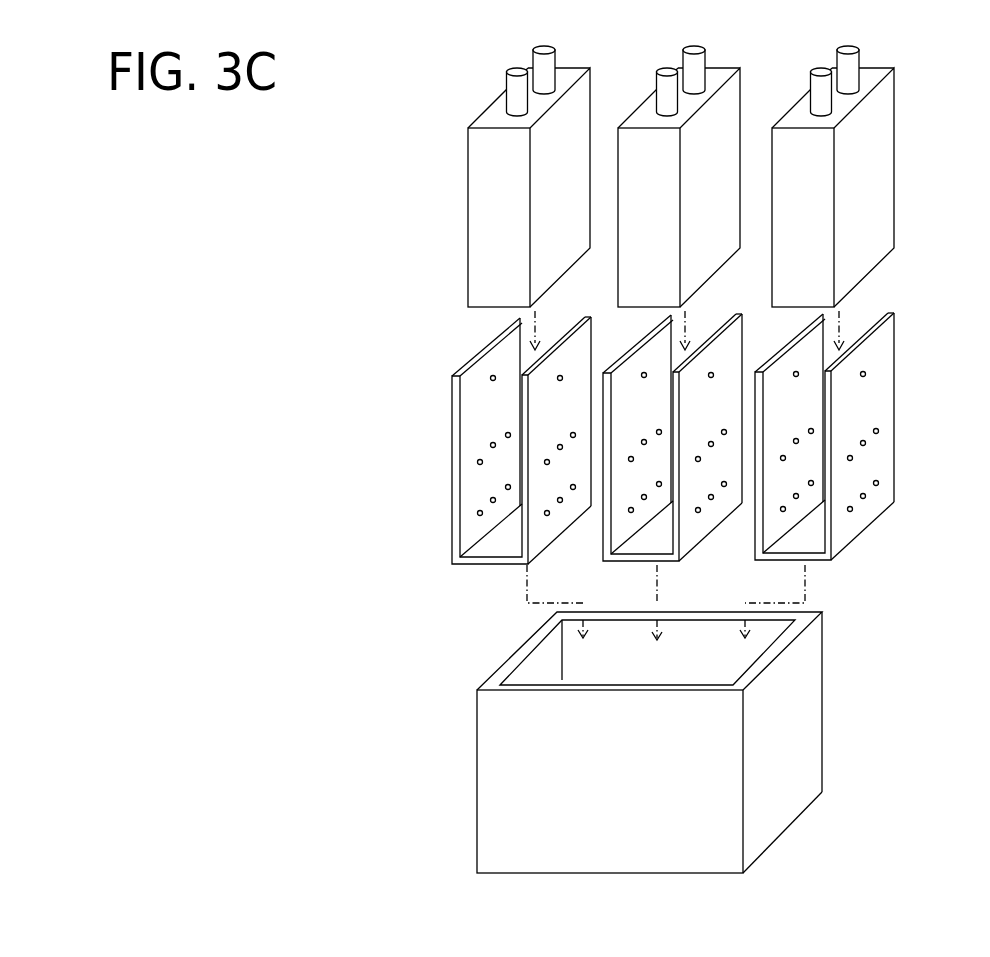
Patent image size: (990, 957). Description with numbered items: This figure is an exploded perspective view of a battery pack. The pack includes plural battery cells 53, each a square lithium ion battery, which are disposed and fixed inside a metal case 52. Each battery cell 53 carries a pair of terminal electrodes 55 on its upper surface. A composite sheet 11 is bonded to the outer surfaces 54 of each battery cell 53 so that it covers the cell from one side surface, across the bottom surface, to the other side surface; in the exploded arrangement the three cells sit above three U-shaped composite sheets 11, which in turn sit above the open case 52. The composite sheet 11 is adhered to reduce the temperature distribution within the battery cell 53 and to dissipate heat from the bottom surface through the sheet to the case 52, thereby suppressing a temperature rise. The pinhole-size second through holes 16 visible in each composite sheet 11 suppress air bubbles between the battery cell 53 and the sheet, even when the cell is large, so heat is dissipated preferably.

The composite sheet 11 is at (878, 403).
The second through hole 16 is at (877, 482).
The case 52 is at (800, 727).
The battery cell 53 is at (633, 233).
The outer surface 54 is at (565, 153).
The terminal electrode 55 is at (820, 89).